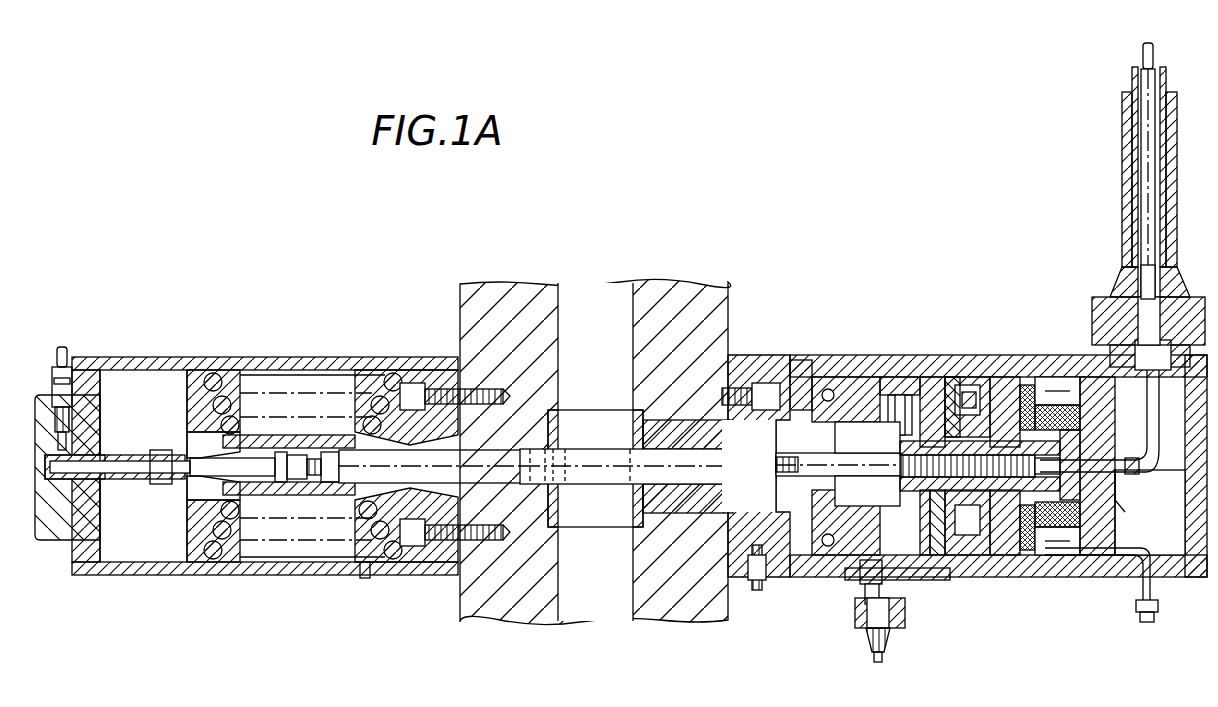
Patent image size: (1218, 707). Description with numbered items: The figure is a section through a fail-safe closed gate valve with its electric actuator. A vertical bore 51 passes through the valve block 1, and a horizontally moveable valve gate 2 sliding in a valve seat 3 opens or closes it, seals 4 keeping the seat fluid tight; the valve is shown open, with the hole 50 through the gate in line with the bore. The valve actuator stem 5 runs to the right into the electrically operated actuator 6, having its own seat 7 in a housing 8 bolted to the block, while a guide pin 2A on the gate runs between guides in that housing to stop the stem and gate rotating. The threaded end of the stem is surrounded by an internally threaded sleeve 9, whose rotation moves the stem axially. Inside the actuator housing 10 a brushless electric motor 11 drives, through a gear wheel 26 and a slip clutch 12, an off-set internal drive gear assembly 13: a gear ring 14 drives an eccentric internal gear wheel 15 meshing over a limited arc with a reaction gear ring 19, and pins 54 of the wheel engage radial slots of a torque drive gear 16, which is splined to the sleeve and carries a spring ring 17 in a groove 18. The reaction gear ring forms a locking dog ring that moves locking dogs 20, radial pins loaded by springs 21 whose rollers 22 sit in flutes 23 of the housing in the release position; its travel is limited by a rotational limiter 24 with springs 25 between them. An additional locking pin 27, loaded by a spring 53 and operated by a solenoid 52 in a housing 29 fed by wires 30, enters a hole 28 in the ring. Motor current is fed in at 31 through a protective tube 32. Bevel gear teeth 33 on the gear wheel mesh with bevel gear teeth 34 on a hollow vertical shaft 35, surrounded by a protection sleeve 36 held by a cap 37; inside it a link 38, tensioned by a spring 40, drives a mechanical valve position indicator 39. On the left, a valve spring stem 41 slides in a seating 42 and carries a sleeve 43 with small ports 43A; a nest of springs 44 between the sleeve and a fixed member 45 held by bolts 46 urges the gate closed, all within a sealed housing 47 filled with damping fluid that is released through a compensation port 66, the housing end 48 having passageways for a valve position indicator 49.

The valve block 1 is at (700, 602).
The valve gate 2 is at (655, 476).
The guide pin 2A is at (745, 470).
The valve seat 3 is at (558, 505).
The seals 4 is at (640, 528).
The valve actuator stem 5 is at (832, 458).
The electrically operated actuator 6 is at (1022, 278).
The seat 7 is at (784, 398).
The housing 8 is at (750, 410).
The sleeve 9 is at (908, 480).
The housing 10 is at (995, 570).
The electric motor 11 is at (1056, 378).
The slip clutch 12 is at (1022, 388).
The off-set internal drive gear assembly 13 is at (988, 350).
The gear ring 14 is at (1003, 392).
The internal gear wheel 15 is at (972, 395).
The torque drive gear 16 is at (930, 408).
The spring ring 17 is at (955, 495).
The groove 18 is at (975, 500).
The reaction gear ring 19 is at (966, 385).
The locking dogs 20 is at (900, 405).
The springs 21 is at (888, 396).
The rollers 22 is at (898, 376).
The flutes 23 is at (915, 578).
The rotational limiter 24 is at (792, 368).
The springs 25 is at (842, 568).
The gear wheel 26 is at (1065, 512).
The locking pin 27 is at (858, 576).
The hole 28 is at (875, 554).
The housing 29 is at (870, 625).
The wires 30 is at (880, 658).
The current supply feed 31 is at (1138, 590).
The tube 32 is at (1158, 615).
The bevel gear teeth 33 is at (1128, 514).
The bevel gear teeth 34 is at (1140, 474).
The vertical shaft 35 is at (1132, 136).
The protection sleeve 36 is at (1124, 178).
The cap 37 is at (1105, 305).
The link 38 is at (1150, 362).
The mechanical valve position indicator 39 is at (1146, 54).
The spring 40 is at (1145, 218).
The valve spring stem 41 is at (445, 456).
The seating 42 is at (383, 420).
The sleeve 43 is at (195, 418).
The small ports 43A is at (205, 505).
The nest of springs 44 is at (262, 515).
The fixed member 45 is at (437, 548).
The bolts 46 is at (433, 388).
The sealed housing 47 is at (178, 358).
The end of the housing 48 is at (62, 520).
The valve position indicator 49 is at (118, 487).
The hole 50 is at (568, 466).
The vertical bore 51 is at (598, 614).
The solenoid 52 is at (895, 614).
The spring 53 is at (864, 592).
The pins 54 is at (953, 378).
The damping fluid volume compensation port 66 is at (365, 572).